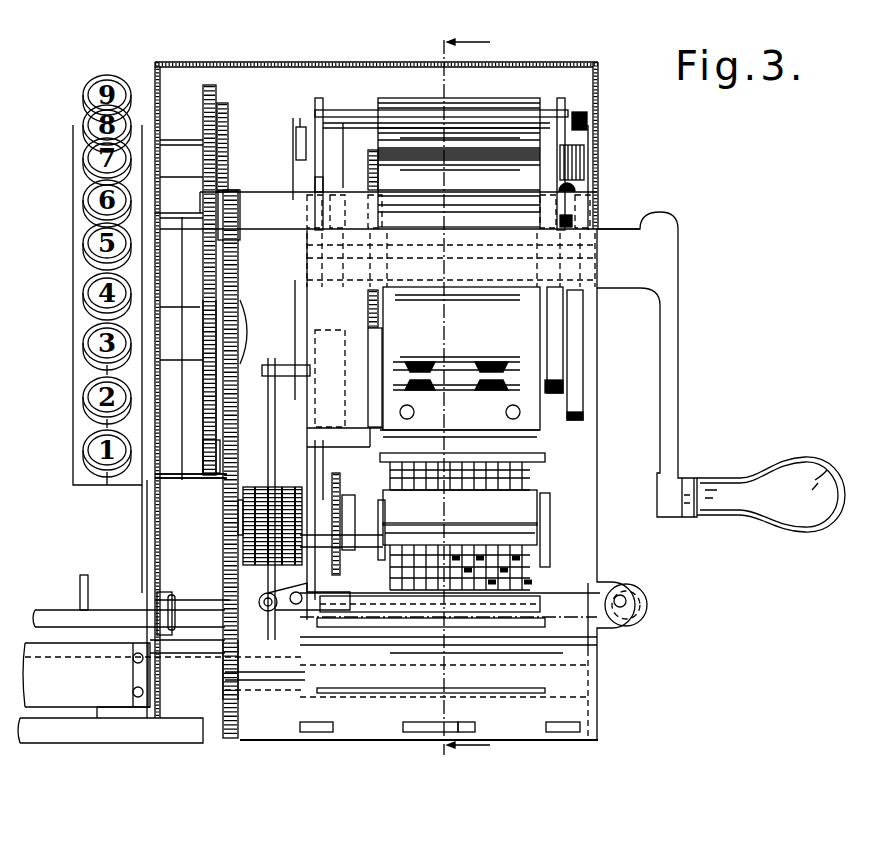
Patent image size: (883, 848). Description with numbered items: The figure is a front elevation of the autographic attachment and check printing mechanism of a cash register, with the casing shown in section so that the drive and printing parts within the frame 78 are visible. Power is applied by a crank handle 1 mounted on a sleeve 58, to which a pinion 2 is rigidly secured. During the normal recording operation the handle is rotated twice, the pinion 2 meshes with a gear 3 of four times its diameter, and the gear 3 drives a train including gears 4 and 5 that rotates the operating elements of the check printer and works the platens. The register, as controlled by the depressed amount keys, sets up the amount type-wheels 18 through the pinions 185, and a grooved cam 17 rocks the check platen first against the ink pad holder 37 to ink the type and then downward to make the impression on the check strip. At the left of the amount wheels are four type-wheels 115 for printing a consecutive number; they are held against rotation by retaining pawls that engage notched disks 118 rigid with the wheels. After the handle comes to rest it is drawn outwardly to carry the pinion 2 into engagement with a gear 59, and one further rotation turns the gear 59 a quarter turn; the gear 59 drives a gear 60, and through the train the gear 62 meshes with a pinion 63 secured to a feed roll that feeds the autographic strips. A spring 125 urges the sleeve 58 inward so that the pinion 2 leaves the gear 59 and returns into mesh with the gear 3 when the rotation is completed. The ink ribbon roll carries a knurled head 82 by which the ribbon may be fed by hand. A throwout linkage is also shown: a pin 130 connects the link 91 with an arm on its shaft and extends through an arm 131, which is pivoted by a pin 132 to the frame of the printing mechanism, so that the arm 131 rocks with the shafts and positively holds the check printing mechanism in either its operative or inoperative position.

The crank handle 1 is at (735, 480).
The pinion 2 is at (463, 398).
The gear 3 is at (203, 412).
The gear 4 is at (207, 90).
The gear 5 is at (236, 113).
The cam 17 is at (553, 322).
The amount type-wheels 18 is at (535, 574).
The ink pad holder 37 is at (518, 497).
The sleeve 58 is at (510, 238).
The gear 59 is at (241, 300).
The gear 60 is at (225, 531).
The gear 62 is at (225, 687).
The pinion 63 is at (232, 738).
The frame 78 is at (155, 103).
The knurled head 82 is at (648, 604).
The link 91 is at (228, 479).
The type-wheels 115 is at (413, 453).
The notched disks 118 is at (440, 465).
The spring 125 is at (330, 590).
The pin 130 is at (298, 370).
The arm 131 is at (300, 305).
The pin 132 is at (293, 118).
The pinions 185 is at (225, 527).